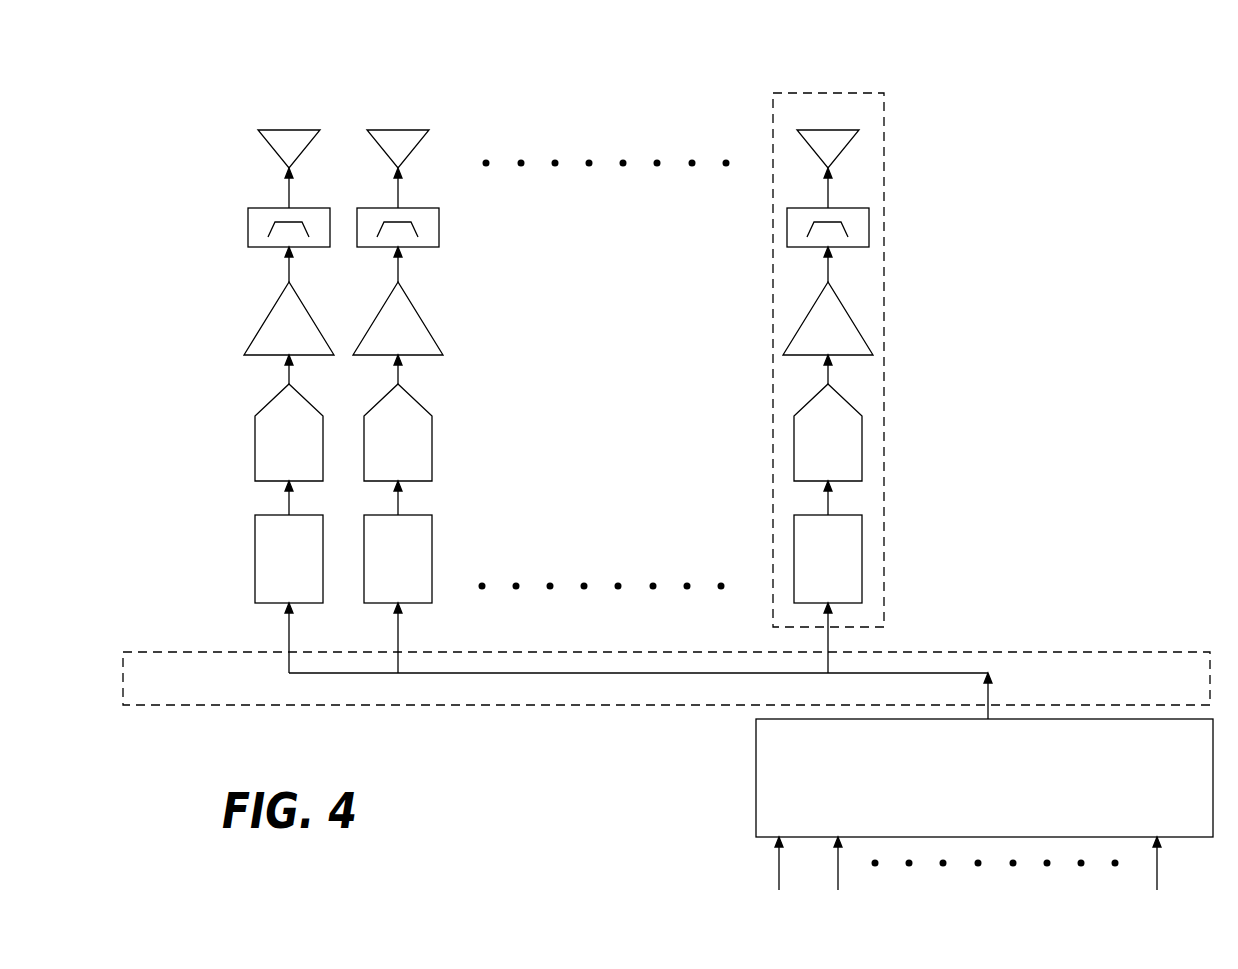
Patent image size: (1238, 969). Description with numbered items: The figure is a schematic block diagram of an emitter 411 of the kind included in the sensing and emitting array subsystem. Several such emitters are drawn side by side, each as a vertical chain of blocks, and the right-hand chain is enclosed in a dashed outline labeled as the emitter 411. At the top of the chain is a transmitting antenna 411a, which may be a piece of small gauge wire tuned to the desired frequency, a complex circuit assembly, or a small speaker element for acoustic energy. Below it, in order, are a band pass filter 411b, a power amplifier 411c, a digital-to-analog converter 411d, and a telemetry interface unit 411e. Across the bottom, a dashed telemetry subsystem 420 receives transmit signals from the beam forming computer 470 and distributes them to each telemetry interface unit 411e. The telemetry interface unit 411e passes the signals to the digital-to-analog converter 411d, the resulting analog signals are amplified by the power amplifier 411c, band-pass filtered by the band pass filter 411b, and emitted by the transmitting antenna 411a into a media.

The emitter 411 is at (898, 338).
The transmitting antenna 411a is at (850, 144).
The band pass filter 411b is at (869, 230).
The power amplifier 411c is at (843, 307).
The digital-to-analog converter 411d is at (862, 420).
The telemetry interface unit 411e is at (862, 538).
The telemetry subsystem 420 is at (547, 705).
The beam forming computer 470 is at (756, 751).